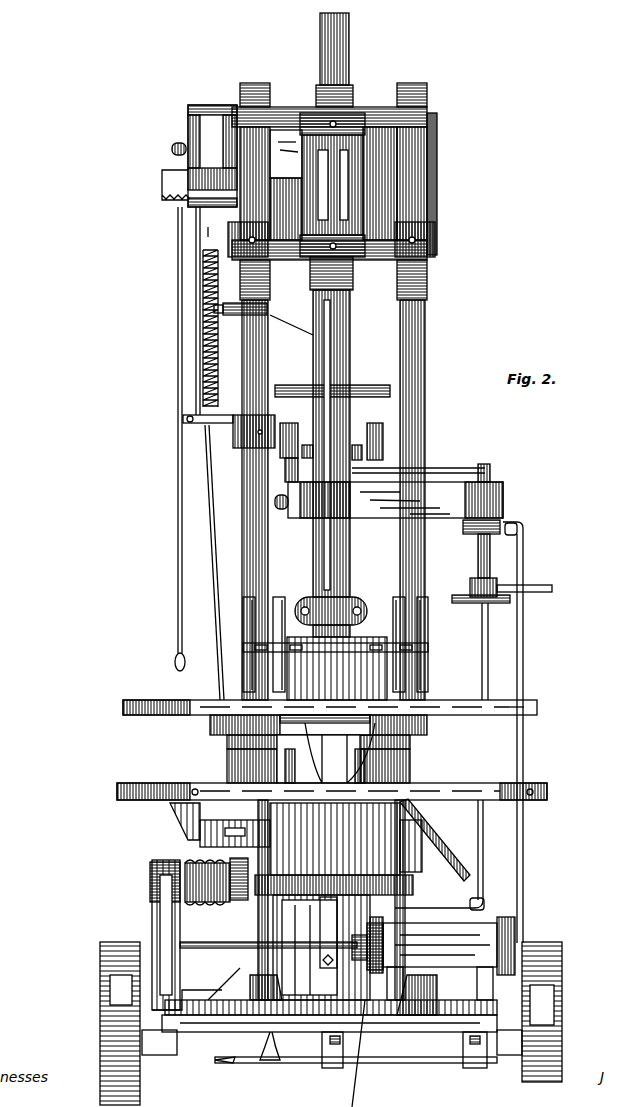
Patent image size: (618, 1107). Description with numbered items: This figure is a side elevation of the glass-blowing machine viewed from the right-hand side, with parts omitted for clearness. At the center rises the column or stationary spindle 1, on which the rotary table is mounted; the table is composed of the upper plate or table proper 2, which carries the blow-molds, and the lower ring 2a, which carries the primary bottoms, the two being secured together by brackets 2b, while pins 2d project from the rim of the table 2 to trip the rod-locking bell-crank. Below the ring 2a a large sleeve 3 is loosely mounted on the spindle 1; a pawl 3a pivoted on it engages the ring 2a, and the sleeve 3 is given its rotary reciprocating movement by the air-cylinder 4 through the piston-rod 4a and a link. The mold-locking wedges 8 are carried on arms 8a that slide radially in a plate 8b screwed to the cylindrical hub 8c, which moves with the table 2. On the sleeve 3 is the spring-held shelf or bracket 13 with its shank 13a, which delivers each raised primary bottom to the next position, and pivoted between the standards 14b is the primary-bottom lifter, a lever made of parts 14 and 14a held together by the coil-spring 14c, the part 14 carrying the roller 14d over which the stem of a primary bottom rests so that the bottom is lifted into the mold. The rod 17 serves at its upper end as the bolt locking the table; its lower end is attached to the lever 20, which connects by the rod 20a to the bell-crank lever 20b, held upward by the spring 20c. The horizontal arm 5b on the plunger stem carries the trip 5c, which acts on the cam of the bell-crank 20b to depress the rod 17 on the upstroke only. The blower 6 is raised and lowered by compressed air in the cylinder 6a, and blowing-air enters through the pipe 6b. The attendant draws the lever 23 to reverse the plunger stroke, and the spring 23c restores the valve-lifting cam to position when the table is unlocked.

The column or stationary spindle 1 is at (338, 362).
The upper plate or table proper 2 is at (537, 712).
The lower part or ring 2a is at (552, 793).
The brackets 2b is at (320, 760).
The pins 2d is at (195, 789).
The sleeve 3 is at (338, 901).
The pawl 3a is at (470, 872).
The air-cylinder 4 is at (455, 965).
The piston-rod 4a is at (280, 1012).
The horizontal arm 5b is at (300, 322).
The trip 5c is at (272, 310).
The blower 6 is at (470, 586).
The cylinder 6a is at (503, 496).
The pipe 6b is at (540, 585).
The locking wedges or keys 8 is at (417, 638).
The arms 8a is at (255, 646).
The plate 8b is at (362, 635).
The cylindrical hub 8c is at (357, 681).
The shelf or bracket 13 is at (180, 822).
The shank 13a is at (200, 834).
The lever part 14 is at (160, 885).
The lever part 14a is at (230, 860).
The standards 14b is at (160, 920).
The coil-spring 14c is at (165, 955).
The roller 14d is at (152, 896).
The rod 17 is at (330, 1036).
The lever 20 is at (405, 1062).
The rod 20a is at (190, 505).
The bell-crank lever 20b is at (212, 438).
The spring 20c is at (207, 330).
The lever 23 is at (178, 548).
The spring 23c is at (172, 205).